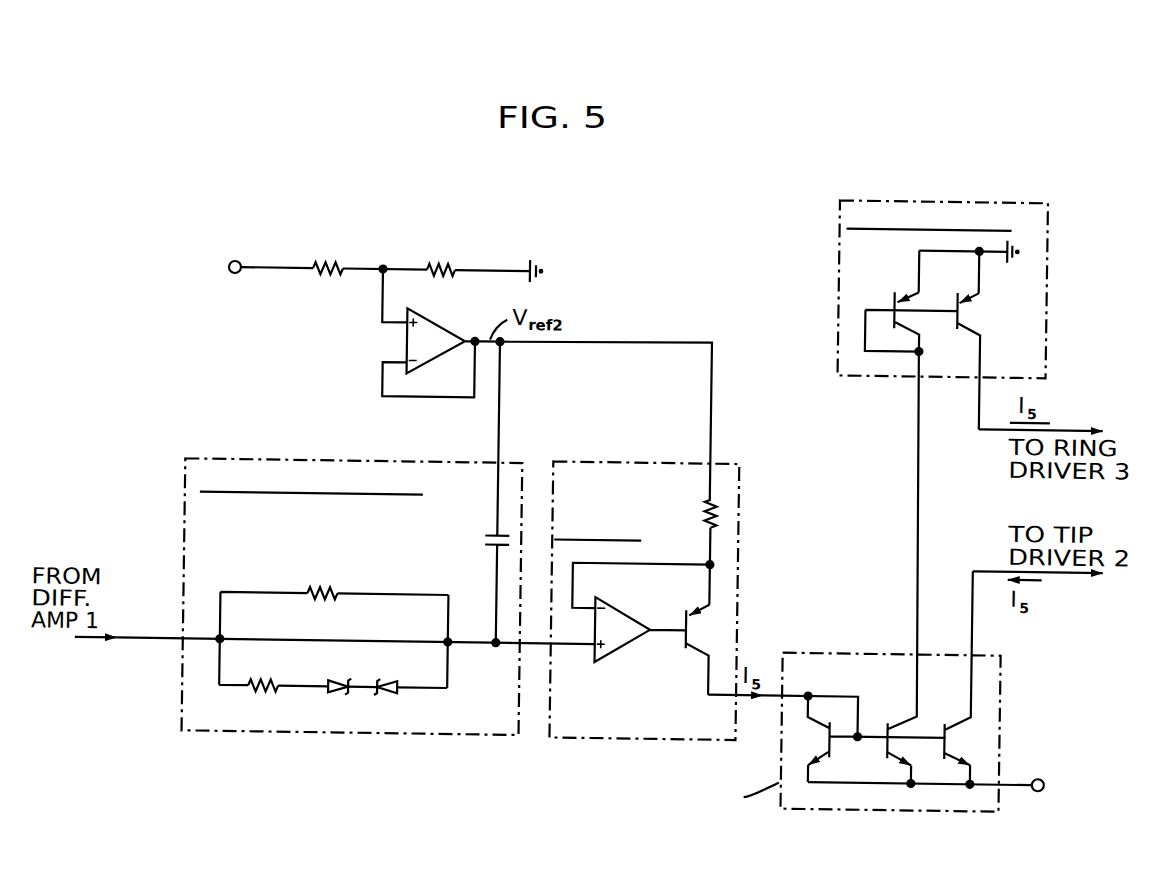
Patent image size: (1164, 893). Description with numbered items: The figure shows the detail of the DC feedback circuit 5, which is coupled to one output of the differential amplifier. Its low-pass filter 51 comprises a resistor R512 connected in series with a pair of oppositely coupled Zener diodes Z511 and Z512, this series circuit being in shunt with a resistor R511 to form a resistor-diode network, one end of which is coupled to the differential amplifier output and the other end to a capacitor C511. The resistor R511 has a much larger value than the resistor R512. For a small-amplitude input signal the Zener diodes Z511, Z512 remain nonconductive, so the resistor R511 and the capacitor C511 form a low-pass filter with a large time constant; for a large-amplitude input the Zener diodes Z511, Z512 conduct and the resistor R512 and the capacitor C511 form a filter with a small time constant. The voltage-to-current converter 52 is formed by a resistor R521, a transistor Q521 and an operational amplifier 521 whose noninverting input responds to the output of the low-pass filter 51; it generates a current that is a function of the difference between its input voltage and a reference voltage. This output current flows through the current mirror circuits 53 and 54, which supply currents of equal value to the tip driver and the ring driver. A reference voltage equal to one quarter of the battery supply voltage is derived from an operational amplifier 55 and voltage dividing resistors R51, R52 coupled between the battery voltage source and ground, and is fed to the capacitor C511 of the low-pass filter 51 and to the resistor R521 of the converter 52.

The DC feedback circuit 5 is at (697, 209).
The low-pass filter 51 is at (238, 453).
The voltage-to-current converter 52 is at (581, 455).
The current mirror circuit 53 is at (792, 642).
The current mirror circuit 54 is at (839, 340).
The operational amplifier 55 is at (430, 315).
The operational amplifier 521 is at (615, 597).
The transistor Q521 is at (676, 629).
The voltage dividing resistor R51 is at (324, 262).
The voltage dividing resistor R52 is at (438, 262).
The resistor R511 is at (327, 589).
The resistor R512 is at (270, 683).
The Zener diode Z511 is at (343, 682).
The Zener diode Z512 is at (395, 682).
The capacitor C511 is at (487, 545).
The resistor R521 is at (719, 501).